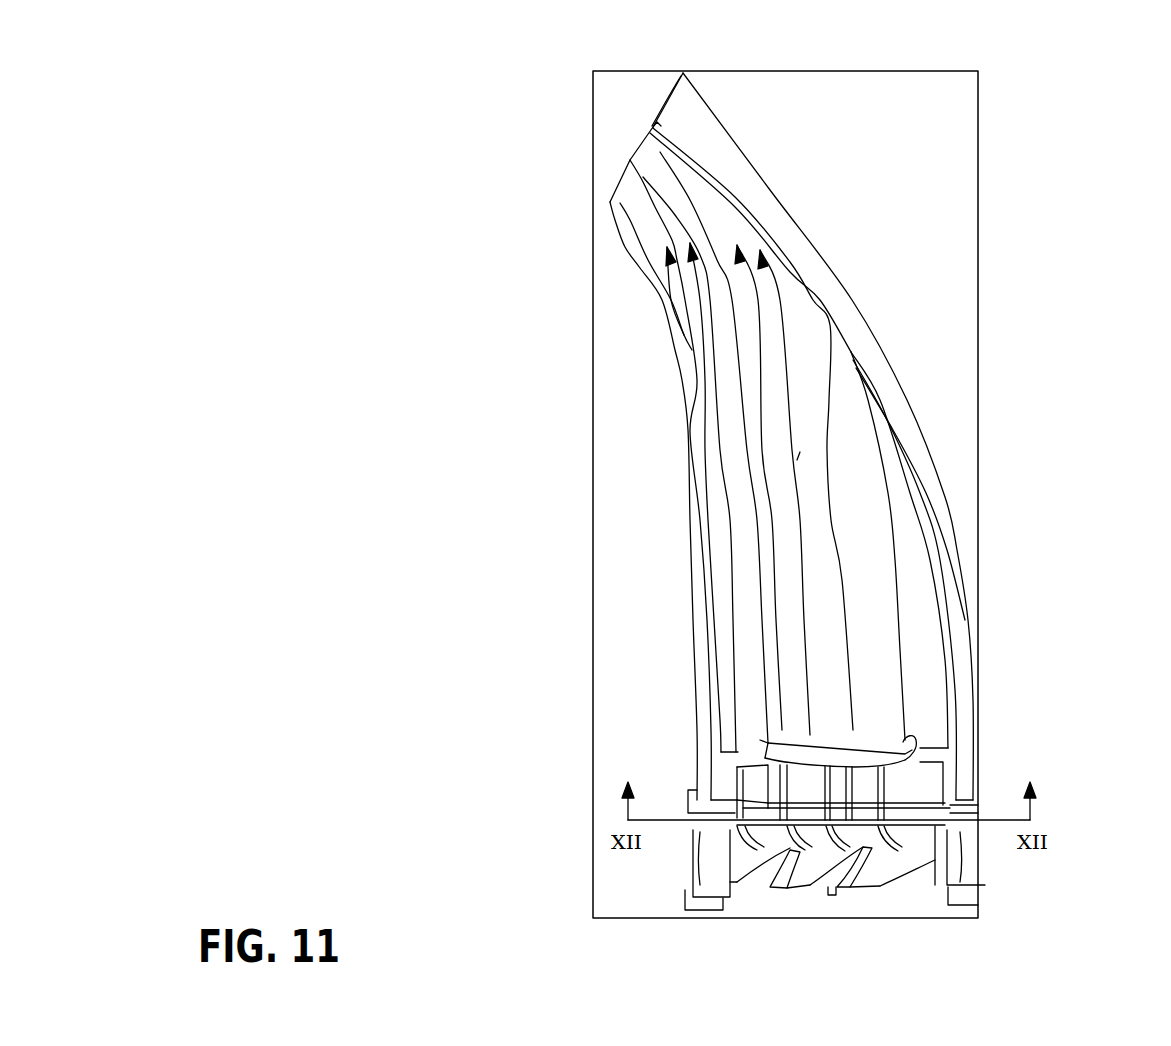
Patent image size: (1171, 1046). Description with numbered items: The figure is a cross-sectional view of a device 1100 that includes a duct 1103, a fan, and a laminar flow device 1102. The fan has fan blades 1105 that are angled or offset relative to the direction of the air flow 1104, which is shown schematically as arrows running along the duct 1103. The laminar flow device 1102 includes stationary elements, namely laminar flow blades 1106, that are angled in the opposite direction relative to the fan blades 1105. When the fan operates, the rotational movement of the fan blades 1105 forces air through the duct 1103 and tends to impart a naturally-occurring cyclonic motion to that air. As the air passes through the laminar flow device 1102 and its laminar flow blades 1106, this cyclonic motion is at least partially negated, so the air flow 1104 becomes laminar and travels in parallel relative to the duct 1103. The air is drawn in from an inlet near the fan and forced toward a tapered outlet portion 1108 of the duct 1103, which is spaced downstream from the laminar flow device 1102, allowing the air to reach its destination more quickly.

The device 1100 is at (990, 856).
The laminar flow device 1102 is at (890, 785).
The duct 1103 is at (694, 534).
The air flow 1104 is at (757, 495).
The fan blades 1105 is at (812, 890).
The laminar flow blades 1106 is at (823, 782).
The tapered outlet portion 1108 is at (688, 114).